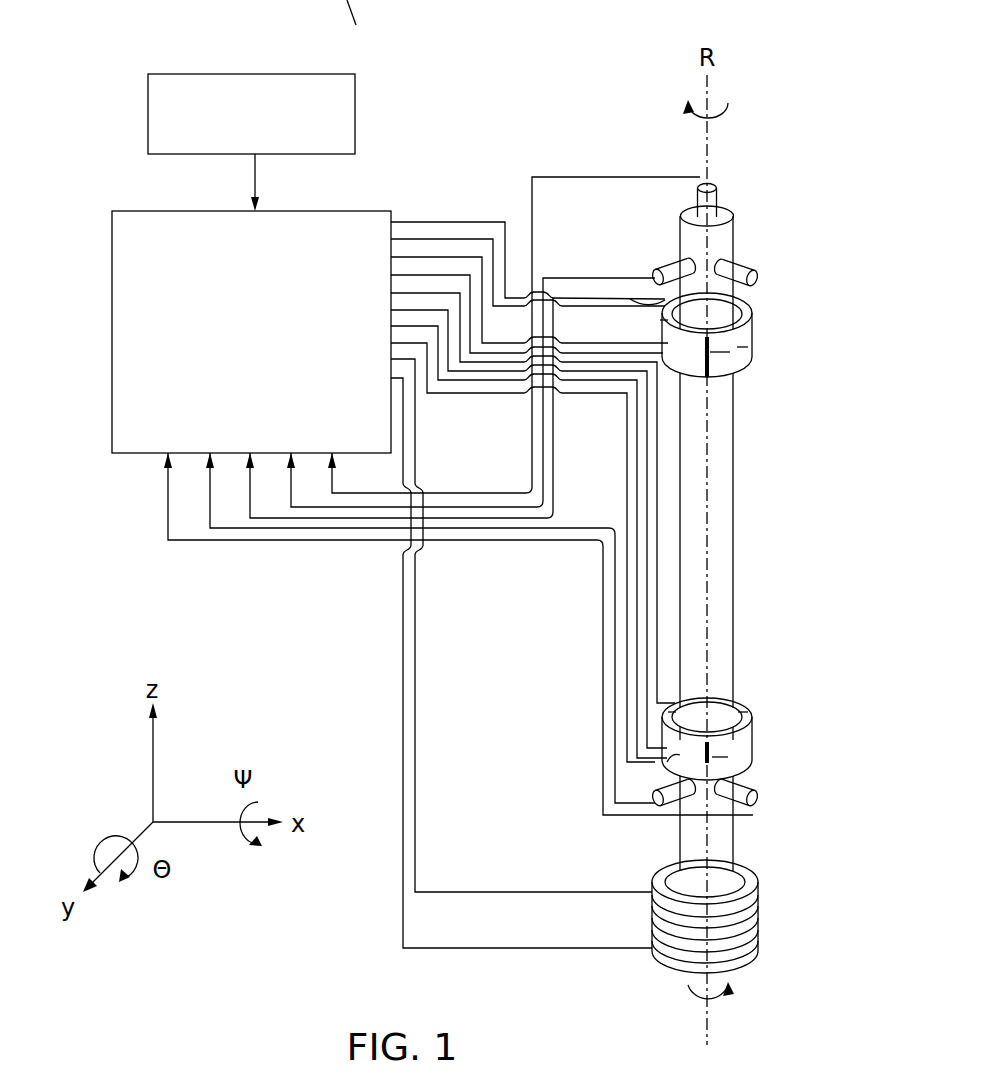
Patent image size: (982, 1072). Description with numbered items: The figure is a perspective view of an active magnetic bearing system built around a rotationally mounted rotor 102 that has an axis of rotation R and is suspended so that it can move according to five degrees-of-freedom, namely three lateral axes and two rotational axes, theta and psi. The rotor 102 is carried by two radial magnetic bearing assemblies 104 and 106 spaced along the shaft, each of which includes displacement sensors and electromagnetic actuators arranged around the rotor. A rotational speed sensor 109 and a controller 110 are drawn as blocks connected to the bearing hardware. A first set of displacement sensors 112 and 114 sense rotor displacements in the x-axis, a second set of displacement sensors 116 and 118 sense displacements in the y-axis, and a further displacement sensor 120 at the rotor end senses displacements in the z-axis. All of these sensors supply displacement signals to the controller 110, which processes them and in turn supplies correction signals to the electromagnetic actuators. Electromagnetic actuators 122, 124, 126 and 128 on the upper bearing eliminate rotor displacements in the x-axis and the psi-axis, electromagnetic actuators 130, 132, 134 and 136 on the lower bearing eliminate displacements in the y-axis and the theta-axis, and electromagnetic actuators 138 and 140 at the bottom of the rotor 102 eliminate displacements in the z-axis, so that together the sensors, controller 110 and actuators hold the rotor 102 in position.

The rotor 102 is at (686, 205).
The radial magnetic bearing assembly 104 is at (796, 160).
The radial magnetic bearing assembly 106 is at (796, 597).
The rotational speed sensor 109 is at (182, 88).
The controller 110 is at (137, 215).
The displacement sensor 112 is at (745, 268).
The displacement sensor 114 is at (758, 800).
The displacement sensor 116 is at (656, 272).
The displacement sensor 118 is at (655, 800).
The displacement sensor 120 is at (722, 203).
The electromagnetic actuator 122 is at (755, 350).
The electromagnetic actuator 124 is at (645, 297).
The electromagnetic actuator 126 is at (660, 320).
The electromagnetic actuator 128 is at (753, 300).
The electromagnetic actuator 130 is at (745, 757).
The electromagnetic actuator 132 is at (670, 715).
The electromagnetic actuator 134 is at (680, 755).
The electromagnetic actuator 136 is at (752, 712).
The electromagnetic actuator 138 is at (758, 883).
The electromagnetic actuator 140 is at (753, 965).